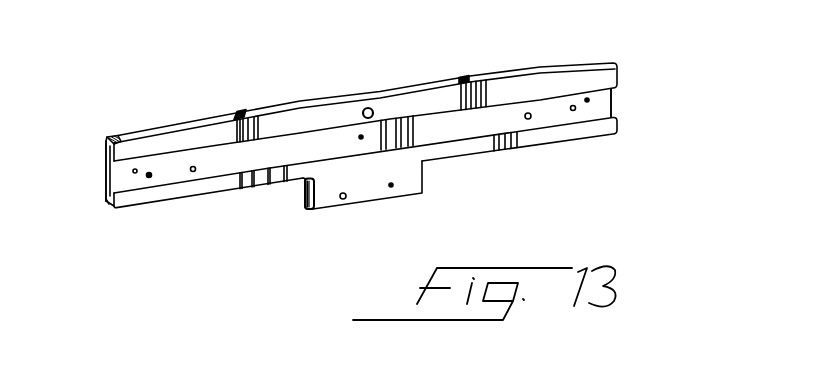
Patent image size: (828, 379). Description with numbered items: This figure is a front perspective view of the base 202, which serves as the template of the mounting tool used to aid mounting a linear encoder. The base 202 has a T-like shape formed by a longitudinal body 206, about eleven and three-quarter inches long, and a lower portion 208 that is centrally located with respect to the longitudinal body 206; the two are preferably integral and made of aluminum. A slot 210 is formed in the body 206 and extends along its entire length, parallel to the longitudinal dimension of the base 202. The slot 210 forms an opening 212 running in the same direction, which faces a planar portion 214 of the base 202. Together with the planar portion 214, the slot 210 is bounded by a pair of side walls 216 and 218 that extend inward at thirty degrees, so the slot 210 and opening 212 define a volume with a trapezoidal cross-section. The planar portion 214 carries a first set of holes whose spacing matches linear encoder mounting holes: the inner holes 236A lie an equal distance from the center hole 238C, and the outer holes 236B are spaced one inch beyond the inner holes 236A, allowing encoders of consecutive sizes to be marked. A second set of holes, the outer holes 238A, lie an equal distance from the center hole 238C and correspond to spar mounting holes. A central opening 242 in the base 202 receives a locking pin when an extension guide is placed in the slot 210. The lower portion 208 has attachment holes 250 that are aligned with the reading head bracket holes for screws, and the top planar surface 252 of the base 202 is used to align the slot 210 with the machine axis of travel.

The base 202 is at (351, 130).
The longitudinal body 206 is at (98, 139).
The lower portion 208 is at (430, 162).
The slot 210 is at (613, 100).
The opening 212 is at (473, 126).
The planar portion 214 is at (213, 160).
The side wall 216 is at (118, 135).
The side wall 218 is at (118, 205).
The inner holes 236A is at (193, 172).
The outer holes 236B is at (149, 178).
The outer holes 238A is at (106, 204).
The center hole 238C is at (358, 137).
The central opening 242 is at (368, 108).
The attachment holes 250 is at (391, 187).
The top planar surface 252 is at (398, 88).